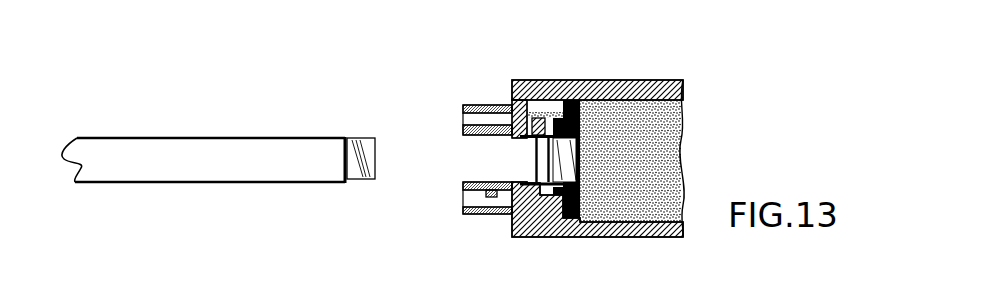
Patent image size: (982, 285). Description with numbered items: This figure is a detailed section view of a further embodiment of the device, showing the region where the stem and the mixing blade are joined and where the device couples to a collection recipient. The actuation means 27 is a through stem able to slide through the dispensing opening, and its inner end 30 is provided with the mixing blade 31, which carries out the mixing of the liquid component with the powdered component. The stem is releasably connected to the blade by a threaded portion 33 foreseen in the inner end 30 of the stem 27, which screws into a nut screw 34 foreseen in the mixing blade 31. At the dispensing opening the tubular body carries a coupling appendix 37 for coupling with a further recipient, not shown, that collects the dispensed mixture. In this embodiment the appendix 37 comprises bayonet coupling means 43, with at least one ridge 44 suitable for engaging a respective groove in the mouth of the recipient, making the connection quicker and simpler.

The actuation means 27 is at (167, 153).
The inner end 30 is at (203, 120).
The mixing blade 31 is at (573, 83).
The threaded portion 33 is at (367, 180).
The nut screw 34 is at (568, 158).
The coupling appendix 37 is at (460, 152).
The bayonet coupling means 43 is at (458, 193).
The ridge 44 is at (490, 197).